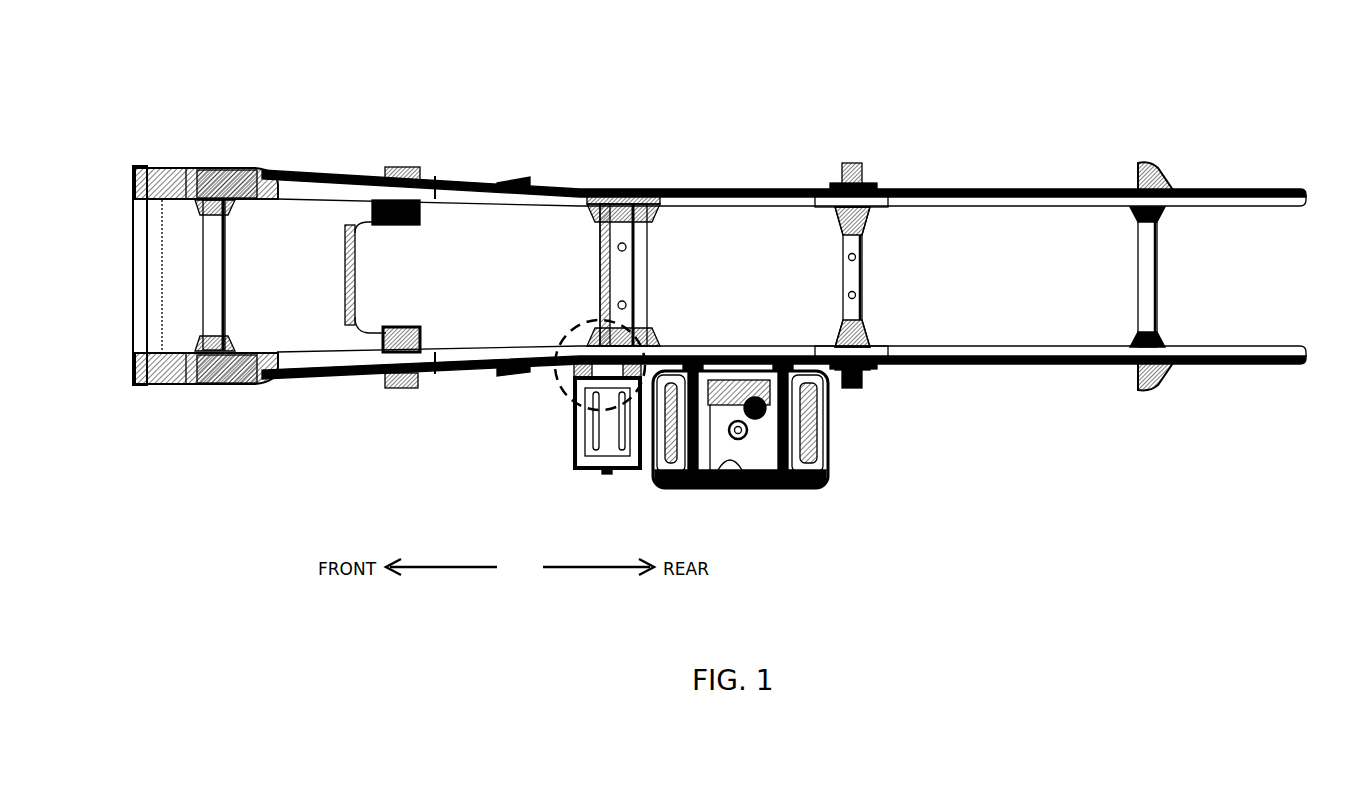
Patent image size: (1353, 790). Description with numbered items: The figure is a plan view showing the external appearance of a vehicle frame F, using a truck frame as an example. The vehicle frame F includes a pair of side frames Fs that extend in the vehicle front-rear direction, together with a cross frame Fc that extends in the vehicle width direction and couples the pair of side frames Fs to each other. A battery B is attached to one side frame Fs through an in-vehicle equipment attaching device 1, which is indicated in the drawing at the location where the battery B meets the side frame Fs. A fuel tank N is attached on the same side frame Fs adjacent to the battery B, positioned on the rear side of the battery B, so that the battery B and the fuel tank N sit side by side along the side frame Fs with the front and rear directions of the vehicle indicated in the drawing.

The vehicle frame F is at (719, 245).
The side frame Fs is at (490, 193).
The cross frame Fc is at (603, 278).
The in-vehicle equipment attaching device 1 is at (560, 387).
The battery B is at (603, 470).
The fuel tank N is at (735, 485).